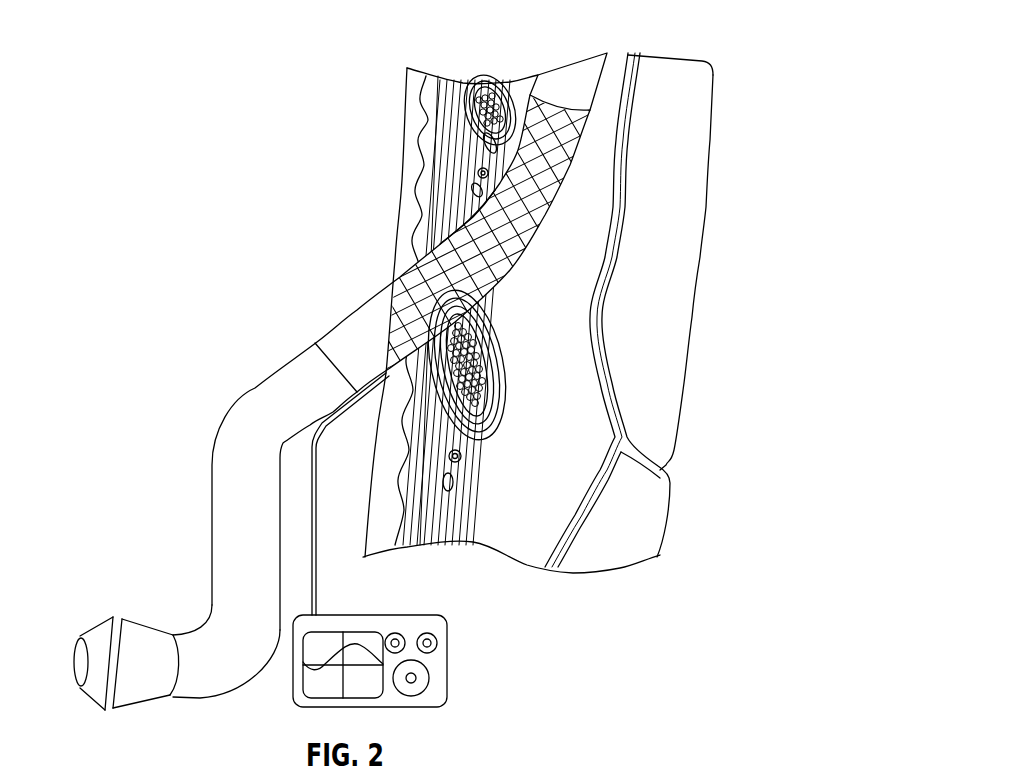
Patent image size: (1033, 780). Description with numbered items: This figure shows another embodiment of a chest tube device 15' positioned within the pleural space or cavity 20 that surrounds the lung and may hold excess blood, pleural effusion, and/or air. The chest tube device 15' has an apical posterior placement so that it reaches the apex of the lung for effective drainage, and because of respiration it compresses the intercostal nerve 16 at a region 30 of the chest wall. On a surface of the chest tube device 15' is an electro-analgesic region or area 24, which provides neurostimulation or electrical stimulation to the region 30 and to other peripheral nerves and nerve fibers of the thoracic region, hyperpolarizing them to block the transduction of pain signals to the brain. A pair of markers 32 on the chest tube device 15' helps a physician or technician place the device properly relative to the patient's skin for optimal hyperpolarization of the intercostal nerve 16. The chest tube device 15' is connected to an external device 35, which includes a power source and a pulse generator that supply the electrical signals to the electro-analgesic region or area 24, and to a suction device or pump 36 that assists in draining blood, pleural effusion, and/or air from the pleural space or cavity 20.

The chest tube device 15' is at (520, 296).
The intercostal nerve 16 is at (473, 190).
The pleural space or cavity 20 is at (555, 323).
The electro-analgesic region or area 24 is at (400, 270).
The region of the chest wall 30 is at (473, 217).
The markers 32 is at (572, 72).
The external device 35 is at (447, 630).
The suction device or pump 36 is at (98, 633).